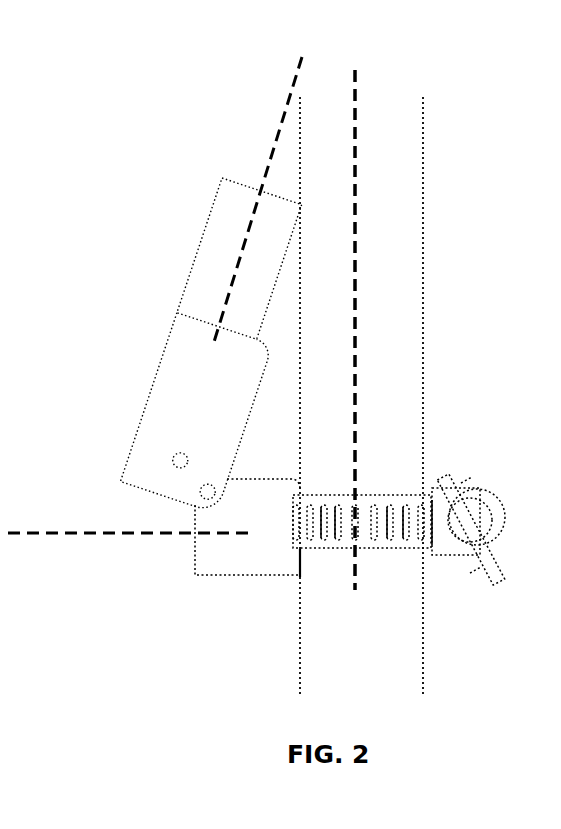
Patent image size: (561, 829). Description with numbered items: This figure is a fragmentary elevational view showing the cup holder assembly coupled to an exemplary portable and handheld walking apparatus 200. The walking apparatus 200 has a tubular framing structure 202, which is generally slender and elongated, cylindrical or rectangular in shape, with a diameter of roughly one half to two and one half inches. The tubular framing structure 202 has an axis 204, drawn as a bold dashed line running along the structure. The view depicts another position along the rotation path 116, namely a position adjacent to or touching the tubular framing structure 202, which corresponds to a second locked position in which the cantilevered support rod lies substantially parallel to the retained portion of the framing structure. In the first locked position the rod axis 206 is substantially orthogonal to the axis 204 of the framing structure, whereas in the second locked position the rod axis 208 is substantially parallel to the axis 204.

The portable and handheld walking apparatus 200 is at (383, 192).
The tubular framing structure 202 is at (383, 233).
The axis 204 is at (355, 363).
The axis 206 is at (232, 283).
The rotation path 116 is at (217, 475).
The axis 208 is at (54, 535).